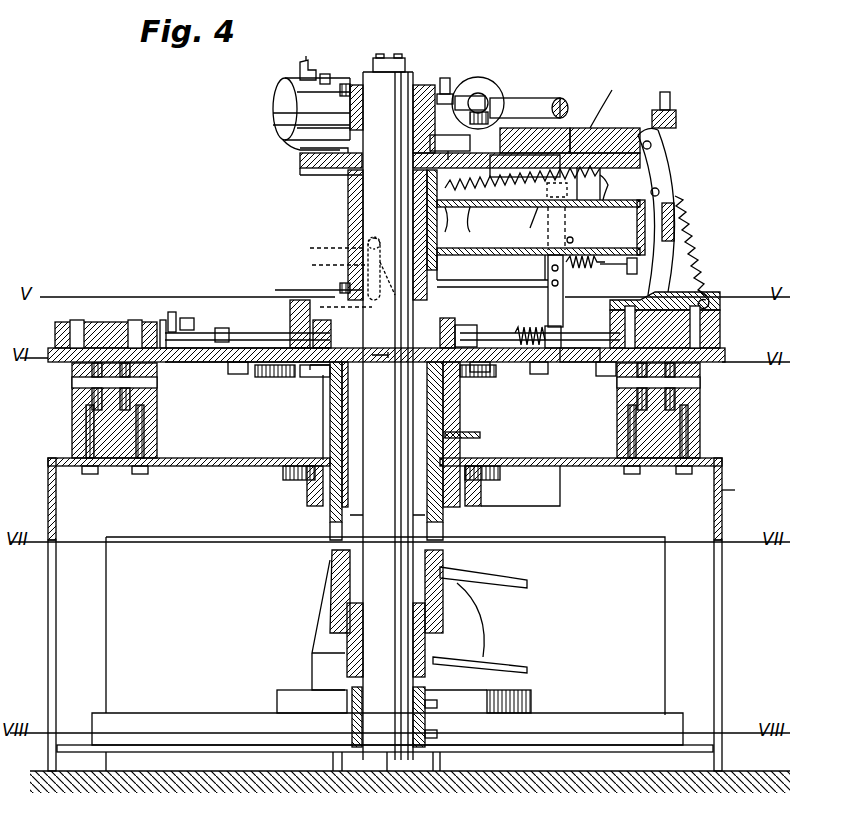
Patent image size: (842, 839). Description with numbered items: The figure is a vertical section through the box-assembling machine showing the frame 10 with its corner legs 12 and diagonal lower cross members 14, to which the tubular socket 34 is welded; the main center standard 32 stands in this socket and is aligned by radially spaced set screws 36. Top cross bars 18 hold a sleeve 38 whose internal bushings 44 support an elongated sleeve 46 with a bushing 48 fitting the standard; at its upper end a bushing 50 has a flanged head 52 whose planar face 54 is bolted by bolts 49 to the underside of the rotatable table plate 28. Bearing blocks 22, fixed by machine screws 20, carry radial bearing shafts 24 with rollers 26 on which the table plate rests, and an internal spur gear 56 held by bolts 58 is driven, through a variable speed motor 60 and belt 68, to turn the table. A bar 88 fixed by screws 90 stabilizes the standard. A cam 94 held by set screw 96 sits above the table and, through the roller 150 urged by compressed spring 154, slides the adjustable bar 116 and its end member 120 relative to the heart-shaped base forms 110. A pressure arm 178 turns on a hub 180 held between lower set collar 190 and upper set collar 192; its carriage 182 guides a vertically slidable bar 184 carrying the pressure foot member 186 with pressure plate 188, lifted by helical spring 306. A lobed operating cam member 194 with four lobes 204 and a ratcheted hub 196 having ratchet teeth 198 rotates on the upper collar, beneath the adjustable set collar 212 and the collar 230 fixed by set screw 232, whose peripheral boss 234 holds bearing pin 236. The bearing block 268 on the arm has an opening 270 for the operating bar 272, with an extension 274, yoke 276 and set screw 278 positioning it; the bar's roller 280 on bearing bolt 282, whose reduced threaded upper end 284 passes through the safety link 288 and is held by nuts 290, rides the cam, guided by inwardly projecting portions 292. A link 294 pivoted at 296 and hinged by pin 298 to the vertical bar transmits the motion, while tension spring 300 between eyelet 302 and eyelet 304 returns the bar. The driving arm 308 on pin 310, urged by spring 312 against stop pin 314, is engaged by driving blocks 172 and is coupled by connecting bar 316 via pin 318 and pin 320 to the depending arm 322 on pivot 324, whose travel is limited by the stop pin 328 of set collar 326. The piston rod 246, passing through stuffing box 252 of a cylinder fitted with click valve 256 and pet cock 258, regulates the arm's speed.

The frame 10 is at (745, 486).
The corner legs 12 is at (355, 800).
The lower cross members 14 is at (632, 716).
The top cross bars 18 is at (520, 498).
The machine screws 20 is at (662, 480).
The bearing block 22 is at (588, 440).
The bearing shaft 24 is at (712, 383).
The rollers 26 is at (617, 430).
The table plate 28 is at (192, 362).
The main center standard 32 is at (387, 513).
The tubular socket 34 is at (350, 725).
The set screws 36 is at (437, 706).
The sleeve 38 is at (330, 552).
The internal bushings 44 is at (443, 568).
The elongated sleeve 46 is at (345, 645).
The bushing 48 is at (340, 668).
The bolts 49 is at (456, 378).
The bushing 50 is at (343, 420).
The flanged head 52 is at (342, 380).
The planar face 54 is at (448, 325).
The internal spur gear 56 is at (272, 378).
The bolts 58 is at (540, 375).
The variable speed motor 60 is at (312, 622).
The belt 68 is at (527, 584).
The bar 88 is at (405, 62).
The screws 90 is at (378, 68).
The cam 94 is at (290, 315).
The set screw 96 is at (365, 423).
The base forms 110 is at (745, 345).
The adjustable bar 116 is at (576, 362).
The end member 120 is at (594, 366).
The roller 150 is at (488, 330).
The compressed spring 154 is at (215, 320).
The driving blocks 172 is at (545, 326).
The pressure arm 178 is at (575, 268).
The hub 180 is at (348, 238).
The carriage 182 is at (676, 215).
The vertically slidable bar 184 is at (690, 240).
The pressure foot member 186 is at (720, 302).
The pressure plate 188 is at (720, 322).
The lower set collar 190 is at (338, 288).
The upper set collar 192 is at (348, 195).
The lobed operating cam member 194 is at (360, 170).
The ratcheted hub 196 is at (296, 144).
The ratchet teeth 198 is at (283, 140).
The lobes 204 is at (300, 165).
The adjustable set collar 212 is at (275, 106).
The collar 230 is at (346, 82).
The set screw 232 is at (322, 72).
The peripheral boss 234 is at (445, 95).
The bearing pin 236 is at (447, 76).
The piston rod 246 is at (562, 98).
The stuffing box 252 is at (492, 85).
The click valve 256 is at (298, 62).
The pet cock 258 is at (311, 109).
The bearing block 268 is at (484, 219).
The opening 270 is at (575, 128).
The operating bar 272 is at (600, 128).
The extension 274 is at (600, 128).
The yoke 276 is at (700, 116).
The set screw 278 is at (672, 96).
The roller 280 is at (525, 166).
The bearing bolt 282 is at (454, 147).
The reduced threaded upper end 284 is at (488, 112).
The safety link 288 is at (480, 92).
The nuts 290 is at (488, 106).
The inwardly projecting portions 292 is at (438, 190).
The link 294 is at (662, 160).
The pivot 296 is at (651, 144).
The pin 298 is at (659, 192).
The tension spring 300 is at (594, 208).
The eyelet 302 is at (457, 223).
The eyelet 304 is at (578, 187).
The helical spring 306 is at (712, 296).
The driving arm 308 is at (545, 266).
The pin 310 is at (539, 228).
The spring 312 is at (603, 265).
The stop pin 314 is at (574, 240).
The connecting bar 316 is at (492, 271).
The pin 318 is at (563, 300).
The pin 320 is at (328, 302).
The depending arm 322 is at (314, 261).
The pivot 324 is at (310, 243).
The set collar 326 is at (296, 285).
The stop pin 328 is at (379, 286).